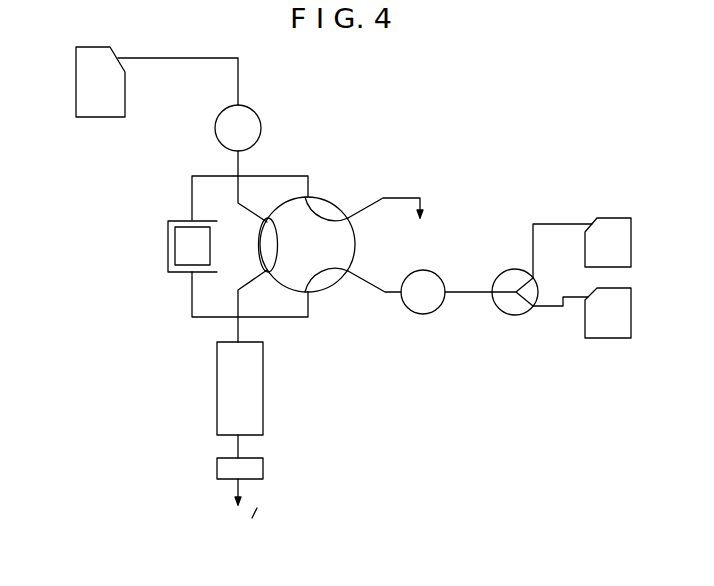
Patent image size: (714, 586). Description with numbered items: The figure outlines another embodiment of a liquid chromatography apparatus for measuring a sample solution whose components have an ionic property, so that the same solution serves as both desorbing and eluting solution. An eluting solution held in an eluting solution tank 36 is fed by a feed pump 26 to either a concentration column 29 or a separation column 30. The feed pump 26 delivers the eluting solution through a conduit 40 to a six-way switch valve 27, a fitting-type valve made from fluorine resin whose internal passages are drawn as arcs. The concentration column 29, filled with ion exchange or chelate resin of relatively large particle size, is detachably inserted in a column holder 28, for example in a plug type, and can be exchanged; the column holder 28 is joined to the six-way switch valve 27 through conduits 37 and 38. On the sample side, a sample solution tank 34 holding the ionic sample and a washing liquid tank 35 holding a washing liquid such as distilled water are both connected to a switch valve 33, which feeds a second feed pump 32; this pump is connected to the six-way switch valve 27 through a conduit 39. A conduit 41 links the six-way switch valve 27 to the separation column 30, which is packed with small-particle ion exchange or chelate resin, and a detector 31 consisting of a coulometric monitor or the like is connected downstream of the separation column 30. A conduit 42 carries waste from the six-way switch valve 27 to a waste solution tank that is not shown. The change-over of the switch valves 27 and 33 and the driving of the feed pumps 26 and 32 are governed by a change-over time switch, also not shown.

The feed pump 26 is at (256, 112).
The six-way switch valve 27 is at (329, 212).
The column holder 28 is at (168, 247).
The concentration column 29 is at (198, 265).
The separation column 30 is at (263, 369).
The detector 31 is at (263, 465).
The feed pump 32 is at (438, 277).
The switch valve 33 is at (525, 314).
The sample solution tank 34 is at (607, 218).
The washing liquid tank 35 is at (607, 338).
The eluting solution tank 36 is at (76, 87).
The conduit 37 is at (297, 176).
The conduit 38 is at (270, 317).
The conduit 39 is at (373, 292).
The conduit 40 is at (238, 165).
The conduit 41 is at (238, 330).
The conduit 42 is at (398, 198).